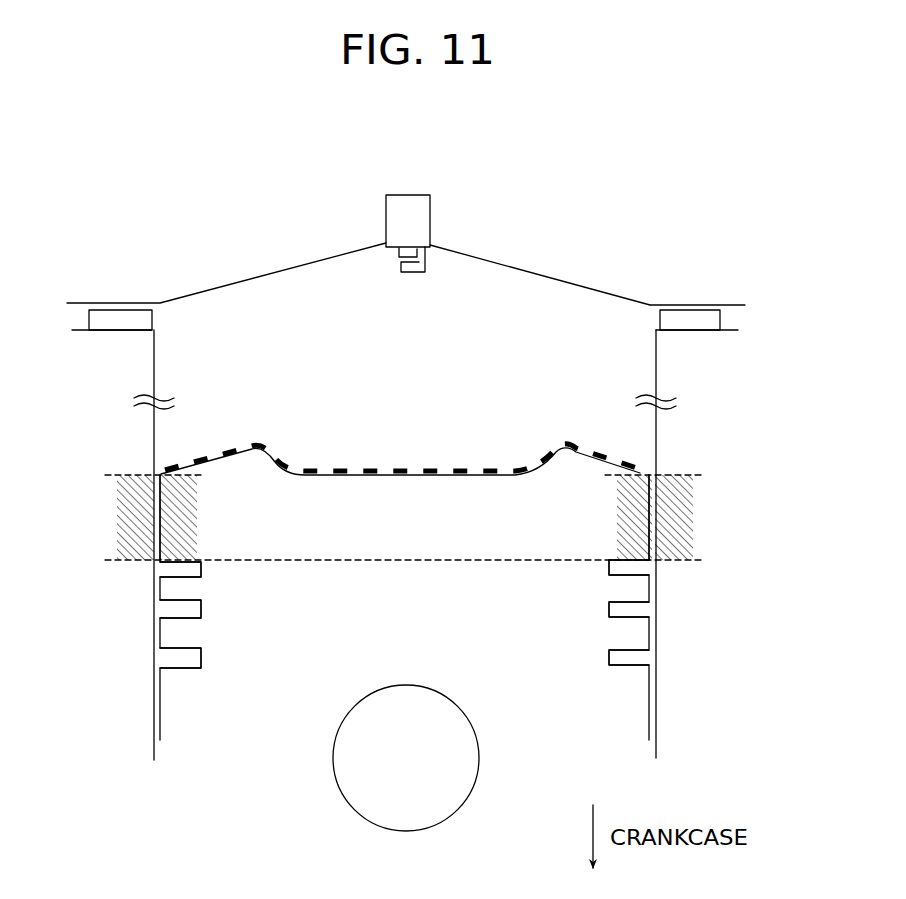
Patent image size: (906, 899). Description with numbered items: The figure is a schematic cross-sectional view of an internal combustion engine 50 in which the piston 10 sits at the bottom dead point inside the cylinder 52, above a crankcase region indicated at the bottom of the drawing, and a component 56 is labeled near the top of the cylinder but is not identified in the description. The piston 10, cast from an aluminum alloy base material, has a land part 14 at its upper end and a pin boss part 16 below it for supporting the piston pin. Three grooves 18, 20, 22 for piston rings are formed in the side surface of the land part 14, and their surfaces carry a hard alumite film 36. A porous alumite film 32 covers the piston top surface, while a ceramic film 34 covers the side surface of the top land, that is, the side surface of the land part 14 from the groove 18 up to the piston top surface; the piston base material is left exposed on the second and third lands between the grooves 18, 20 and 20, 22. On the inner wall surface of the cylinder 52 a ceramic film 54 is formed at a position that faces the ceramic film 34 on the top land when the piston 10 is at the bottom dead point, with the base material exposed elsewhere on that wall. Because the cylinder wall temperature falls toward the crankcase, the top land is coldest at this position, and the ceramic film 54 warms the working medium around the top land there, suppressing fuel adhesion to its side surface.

The piston 10 is at (602, 723).
The land part 14 is at (187, 685).
The pin boss part 16 is at (433, 790).
The groove 18 is at (156, 569).
The groove 20 is at (160, 610).
The groove 22 is at (160, 659).
The porous alumite film 32 is at (310, 470).
The ceramic film 34 is at (180, 511).
The hard alumite film 36 is at (655, 568).
The internal combustion engine 50 is at (650, 260).
The cylinder 52 is at (158, 384).
The ceramic film 54 is at (125, 511).
The head gasket 56 is at (170, 276).